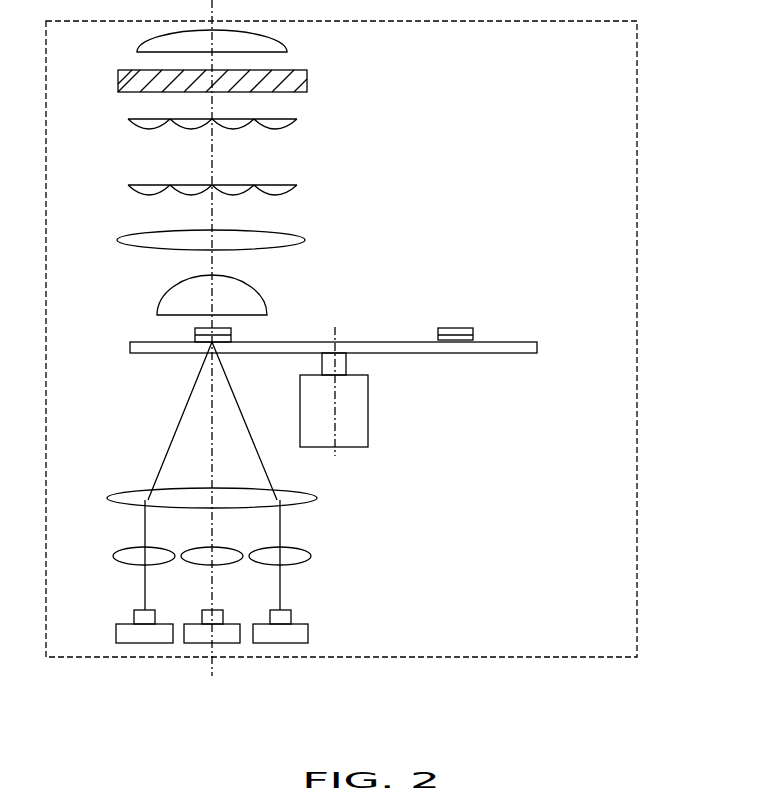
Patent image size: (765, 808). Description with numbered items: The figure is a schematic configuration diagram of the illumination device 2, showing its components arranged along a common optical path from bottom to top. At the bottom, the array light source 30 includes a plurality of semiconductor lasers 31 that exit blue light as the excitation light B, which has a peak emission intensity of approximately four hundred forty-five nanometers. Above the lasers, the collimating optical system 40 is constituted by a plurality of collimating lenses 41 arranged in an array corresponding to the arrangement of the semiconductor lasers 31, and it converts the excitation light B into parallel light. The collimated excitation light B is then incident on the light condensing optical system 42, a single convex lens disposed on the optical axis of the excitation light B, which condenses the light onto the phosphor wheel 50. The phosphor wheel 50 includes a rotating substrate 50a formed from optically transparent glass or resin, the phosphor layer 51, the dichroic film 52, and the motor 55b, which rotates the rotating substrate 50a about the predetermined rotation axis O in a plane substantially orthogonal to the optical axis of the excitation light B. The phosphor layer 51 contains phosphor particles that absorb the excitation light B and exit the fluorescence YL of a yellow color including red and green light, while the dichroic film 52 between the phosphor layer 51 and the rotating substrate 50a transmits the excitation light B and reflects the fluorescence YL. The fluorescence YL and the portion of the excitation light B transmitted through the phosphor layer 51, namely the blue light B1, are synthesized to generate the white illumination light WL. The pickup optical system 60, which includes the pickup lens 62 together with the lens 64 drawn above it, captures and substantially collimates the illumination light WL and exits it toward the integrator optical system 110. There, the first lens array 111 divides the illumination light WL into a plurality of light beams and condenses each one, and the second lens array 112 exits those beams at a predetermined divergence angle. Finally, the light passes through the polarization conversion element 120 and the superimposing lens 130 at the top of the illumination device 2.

The illumination device 2 is at (637, 75).
The superimposing lens 130 is at (288, 45).
The polarization conversion element 120 is at (307, 80).
The second lens array 112 is at (301, 123).
The first lens array 111 is at (301, 189).
The integrator optical system 110 is at (297, 150).
The second collimating lens 64 is at (305, 238).
The pickup lens 62 is at (262, 282).
The pickup optical system 60 is at (276, 263).
The phosphor wheel 50 is at (343, 354).
The rotating substrate 50a is at (513, 355).
The phosphor layer 51 is at (448, 328).
The dichroic film 52 is at (455, 342).
The motor 55b is at (355, 407).
The light condensing optical system 42 is at (312, 497).
The collimating lens 41 is at (300, 553).
The collimating optical system 40 is at (256, 546).
The array light source 30 is at (252, 659).
The semiconductor laser 31 is at (267, 637).
The excitation light B is at (203, 408).
The blue light B1 is at (222, 308).
The fluorescence YL is at (222, 226).
The illumination light WL is at (101, 143).
The rotation axis O is at (337, 332).